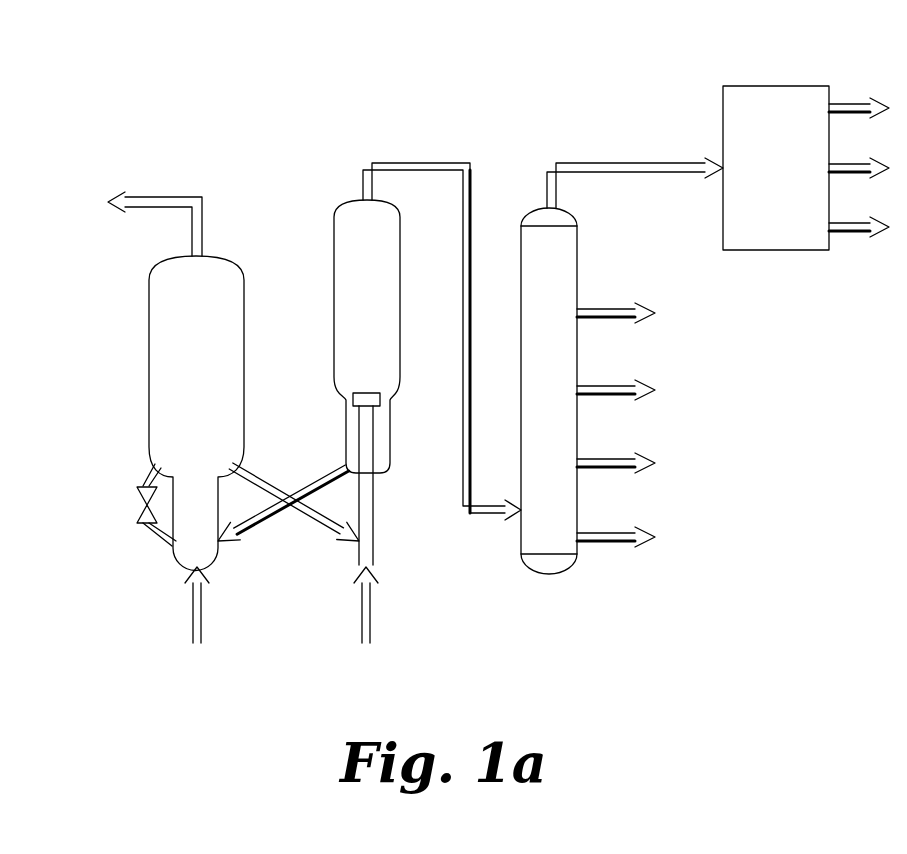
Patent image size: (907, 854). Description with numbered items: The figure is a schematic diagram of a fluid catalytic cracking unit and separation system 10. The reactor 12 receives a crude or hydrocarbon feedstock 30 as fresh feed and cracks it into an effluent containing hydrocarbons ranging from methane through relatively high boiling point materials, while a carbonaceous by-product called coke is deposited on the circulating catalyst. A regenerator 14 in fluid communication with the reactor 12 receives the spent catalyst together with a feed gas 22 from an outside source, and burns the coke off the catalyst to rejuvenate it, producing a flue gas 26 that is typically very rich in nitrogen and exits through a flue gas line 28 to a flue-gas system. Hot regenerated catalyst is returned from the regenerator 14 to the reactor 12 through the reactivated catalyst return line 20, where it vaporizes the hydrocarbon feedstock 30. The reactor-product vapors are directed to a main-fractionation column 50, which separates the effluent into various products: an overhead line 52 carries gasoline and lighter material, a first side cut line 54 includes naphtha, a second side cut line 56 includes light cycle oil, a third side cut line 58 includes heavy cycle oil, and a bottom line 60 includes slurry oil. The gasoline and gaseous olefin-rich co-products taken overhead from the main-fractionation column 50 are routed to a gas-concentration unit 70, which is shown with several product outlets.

The fluid catalytic cracking unit and separation system 10 is at (194, 125).
The reactor 12 is at (380, 316).
The regenerator 14 is at (211, 386).
The reactivated catalyst return line 20 is at (263, 480).
The feed gas 22 is at (202, 612).
The flue gas 26 is at (108, 194).
The flue gas line 28 is at (155, 197).
The hydrocarbon feedstock 30 is at (372, 612).
The main-fractionation column 50 is at (563, 402).
The overhead line 52 is at (545, 190).
The first side cut line 54 is at (632, 314).
The second side cut line 56 is at (632, 391).
The third side cut line 58 is at (632, 464).
The bottom line 60 is at (632, 538).
The gas-concentration unit 70 is at (791, 180).